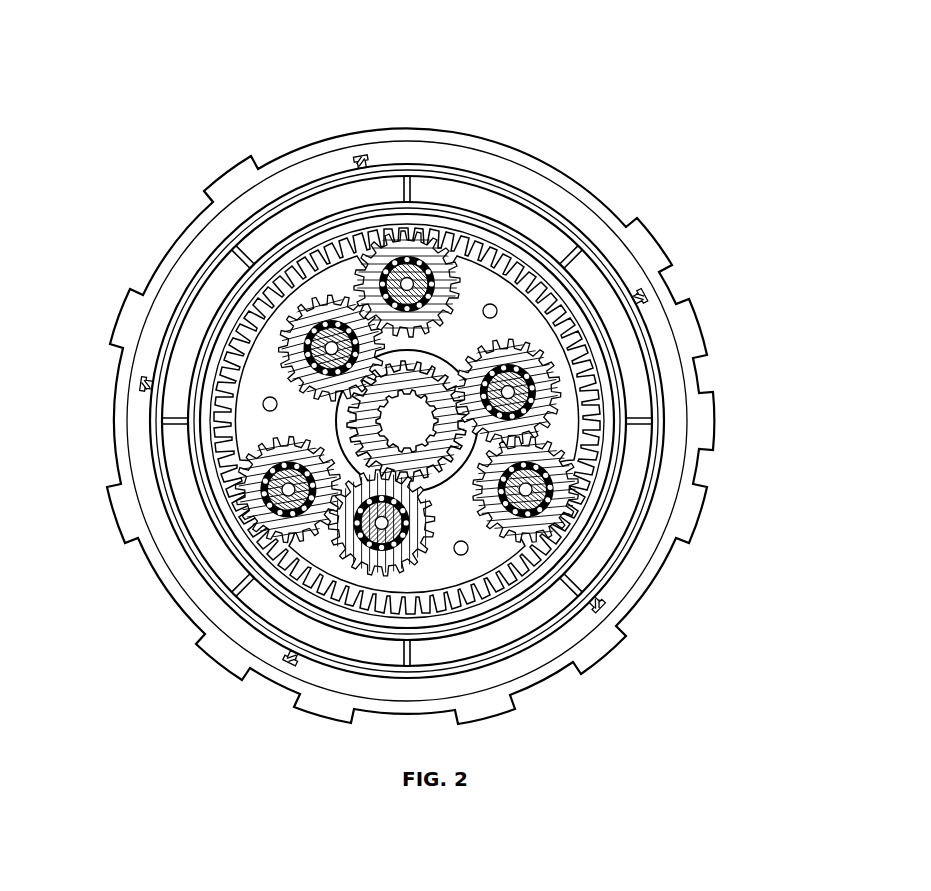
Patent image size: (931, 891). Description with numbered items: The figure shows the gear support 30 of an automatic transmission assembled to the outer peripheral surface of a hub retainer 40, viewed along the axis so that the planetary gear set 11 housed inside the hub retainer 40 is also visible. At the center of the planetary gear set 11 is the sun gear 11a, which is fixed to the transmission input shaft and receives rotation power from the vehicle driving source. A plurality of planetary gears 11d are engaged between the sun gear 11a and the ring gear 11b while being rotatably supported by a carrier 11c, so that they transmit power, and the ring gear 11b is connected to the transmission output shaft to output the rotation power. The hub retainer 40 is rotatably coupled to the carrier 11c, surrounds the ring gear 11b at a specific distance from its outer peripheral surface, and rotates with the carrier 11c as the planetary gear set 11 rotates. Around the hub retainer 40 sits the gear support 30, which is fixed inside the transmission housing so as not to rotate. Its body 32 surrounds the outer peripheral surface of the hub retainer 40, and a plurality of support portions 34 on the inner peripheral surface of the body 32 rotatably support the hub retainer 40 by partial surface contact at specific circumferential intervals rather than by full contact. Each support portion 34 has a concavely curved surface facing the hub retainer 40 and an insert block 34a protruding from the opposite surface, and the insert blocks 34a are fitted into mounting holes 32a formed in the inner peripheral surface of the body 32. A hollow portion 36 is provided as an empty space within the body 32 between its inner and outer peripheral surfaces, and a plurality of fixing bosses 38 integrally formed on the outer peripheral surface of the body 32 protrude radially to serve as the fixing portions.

The planetary gear set 11 is at (660, 265).
The sun gear 11a is at (537, 412).
The ring gear 11b is at (600, 476).
The carrier 11c is at (497, 553).
The planetary gears 11d is at (592, 396).
The gear support 30 is at (527, 149).
The body 32 is at (445, 148).
The mounting holes 32a is at (372, 152).
The support portions 34 is at (348, 168).
The insert block 34a is at (356, 165).
The hollow portion 36 is at (203, 245).
The fixing bosses 38 is at (121, 325).
The hub retainer 40 is at (548, 214).